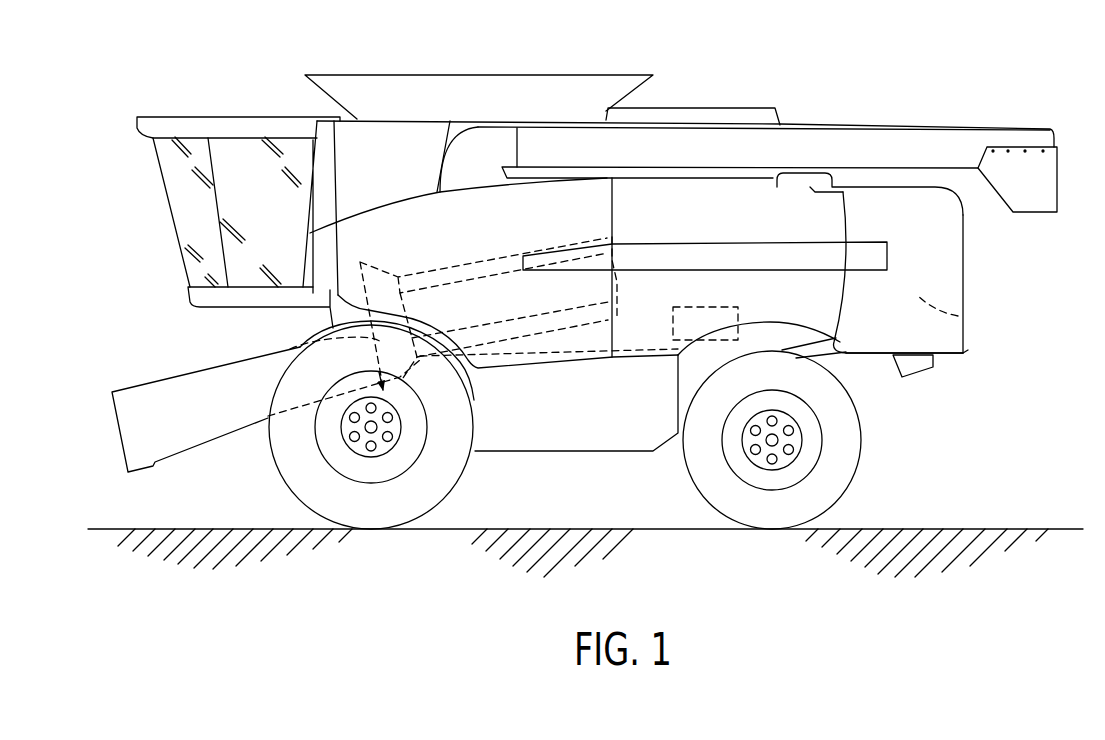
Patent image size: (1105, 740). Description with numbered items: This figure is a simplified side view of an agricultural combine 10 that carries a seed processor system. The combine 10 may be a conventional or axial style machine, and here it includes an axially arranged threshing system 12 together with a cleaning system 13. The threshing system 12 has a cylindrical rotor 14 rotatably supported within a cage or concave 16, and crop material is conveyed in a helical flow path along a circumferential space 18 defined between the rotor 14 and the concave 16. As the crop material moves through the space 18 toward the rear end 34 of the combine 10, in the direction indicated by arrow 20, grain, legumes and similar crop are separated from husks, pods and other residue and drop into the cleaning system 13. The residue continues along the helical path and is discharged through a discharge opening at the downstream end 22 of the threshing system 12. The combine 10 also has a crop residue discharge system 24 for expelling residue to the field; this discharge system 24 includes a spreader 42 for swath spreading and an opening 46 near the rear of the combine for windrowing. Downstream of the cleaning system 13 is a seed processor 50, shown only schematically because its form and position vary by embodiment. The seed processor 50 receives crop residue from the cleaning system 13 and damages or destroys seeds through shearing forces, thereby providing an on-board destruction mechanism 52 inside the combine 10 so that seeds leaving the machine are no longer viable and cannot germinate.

The agricultural combine 10 is at (895, 84).
The threshing system 12 is at (452, 265).
The cleaning system 13 is at (572, 367).
The cylindrical rotor 14 is at (503, 270).
The concave 16 is at (505, 335).
The circumferential space 18 is at (480, 333).
The arrow 20 is at (558, 320).
The downstream end 22 is at (617, 283).
The crop residue discharge system 24 is at (973, 359).
The rear end 34 is at (965, 287).
The spreader 42 is at (912, 362).
The opening 46 is at (963, 317).
The seed processor 50 is at (725, 307).
The on-board destruction mechanism 52 is at (740, 302).